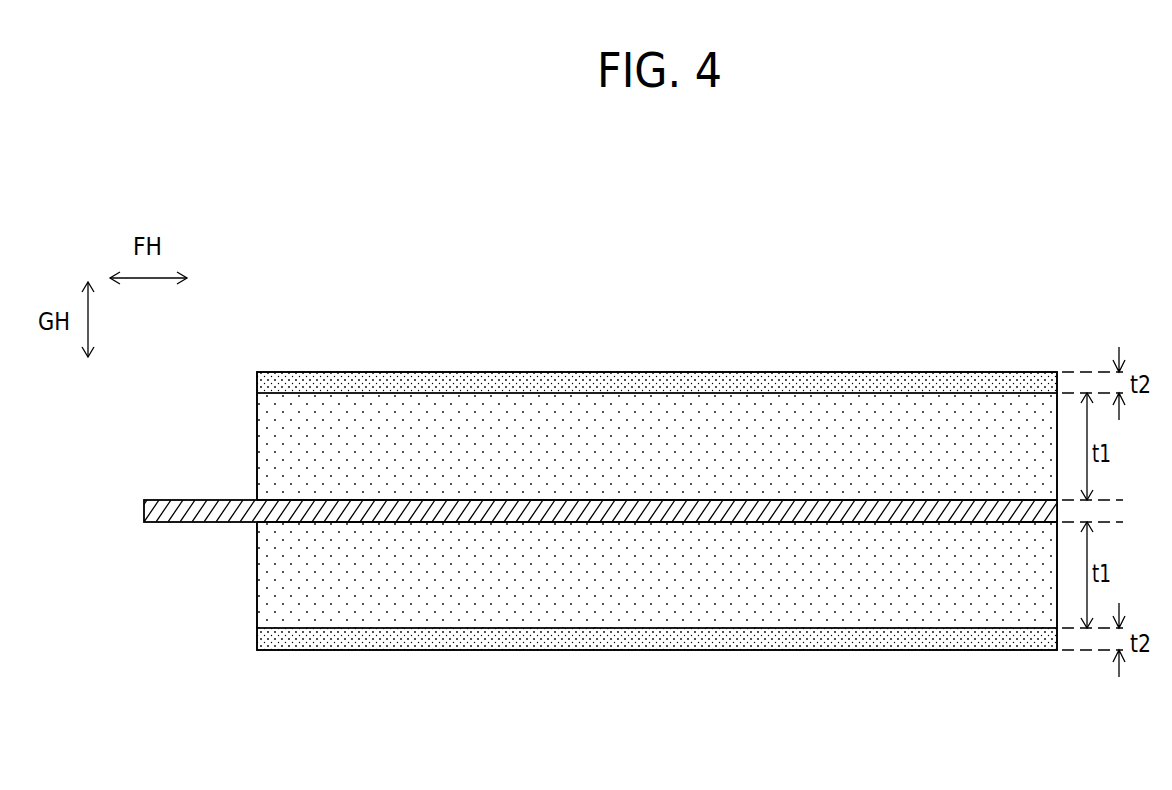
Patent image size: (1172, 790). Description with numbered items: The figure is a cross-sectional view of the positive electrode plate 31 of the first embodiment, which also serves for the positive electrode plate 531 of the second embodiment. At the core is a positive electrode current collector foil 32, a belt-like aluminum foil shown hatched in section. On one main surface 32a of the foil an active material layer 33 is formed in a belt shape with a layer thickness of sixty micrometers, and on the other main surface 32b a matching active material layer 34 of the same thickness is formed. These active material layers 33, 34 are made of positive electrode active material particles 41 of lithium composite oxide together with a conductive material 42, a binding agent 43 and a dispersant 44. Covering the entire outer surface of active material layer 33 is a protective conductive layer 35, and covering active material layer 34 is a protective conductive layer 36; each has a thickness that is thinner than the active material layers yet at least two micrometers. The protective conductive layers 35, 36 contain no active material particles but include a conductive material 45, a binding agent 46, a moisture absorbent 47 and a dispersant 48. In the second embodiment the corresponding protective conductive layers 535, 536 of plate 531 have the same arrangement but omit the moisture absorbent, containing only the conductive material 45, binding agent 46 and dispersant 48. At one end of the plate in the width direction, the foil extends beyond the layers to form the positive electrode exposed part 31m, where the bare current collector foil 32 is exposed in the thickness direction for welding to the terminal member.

The positive electrode plate 31 is at (1010, 255).
The positive electrode plate 531 is at (600, 505).
The positive electrode exposed part 31m is at (207, 500).
The positive electrode current collector foil 32 is at (600, 509).
The one main surface 32a is at (402, 500).
The other main surface 32b is at (402, 522).
The active material layer 33 is at (552, 440).
The active material layer 34 is at (560, 600).
The protective conductive layer 35 is at (677, 383).
The protective conductive layer 36 is at (722, 641).
The protective conductive layer 535 is at (657, 338).
The protective conductive layer 536 is at (657, 684).
The positive electrode active material particles 41 is at (657, 505).
The conductive material 42 is at (657, 505).
The binding agent 43 is at (657, 505).
The dispersant 44 is at (657, 505).
The conductive material 45 is at (657, 512).
The binding agent 46 is at (657, 512).
The moisture absorbent 47 is at (657, 512).
The dispersant 48 is at (657, 512).